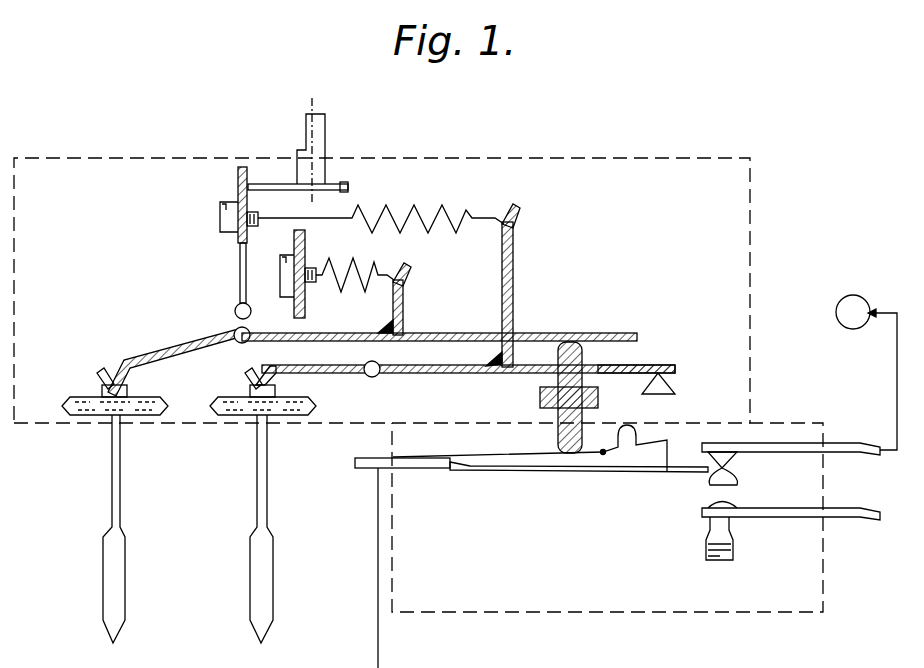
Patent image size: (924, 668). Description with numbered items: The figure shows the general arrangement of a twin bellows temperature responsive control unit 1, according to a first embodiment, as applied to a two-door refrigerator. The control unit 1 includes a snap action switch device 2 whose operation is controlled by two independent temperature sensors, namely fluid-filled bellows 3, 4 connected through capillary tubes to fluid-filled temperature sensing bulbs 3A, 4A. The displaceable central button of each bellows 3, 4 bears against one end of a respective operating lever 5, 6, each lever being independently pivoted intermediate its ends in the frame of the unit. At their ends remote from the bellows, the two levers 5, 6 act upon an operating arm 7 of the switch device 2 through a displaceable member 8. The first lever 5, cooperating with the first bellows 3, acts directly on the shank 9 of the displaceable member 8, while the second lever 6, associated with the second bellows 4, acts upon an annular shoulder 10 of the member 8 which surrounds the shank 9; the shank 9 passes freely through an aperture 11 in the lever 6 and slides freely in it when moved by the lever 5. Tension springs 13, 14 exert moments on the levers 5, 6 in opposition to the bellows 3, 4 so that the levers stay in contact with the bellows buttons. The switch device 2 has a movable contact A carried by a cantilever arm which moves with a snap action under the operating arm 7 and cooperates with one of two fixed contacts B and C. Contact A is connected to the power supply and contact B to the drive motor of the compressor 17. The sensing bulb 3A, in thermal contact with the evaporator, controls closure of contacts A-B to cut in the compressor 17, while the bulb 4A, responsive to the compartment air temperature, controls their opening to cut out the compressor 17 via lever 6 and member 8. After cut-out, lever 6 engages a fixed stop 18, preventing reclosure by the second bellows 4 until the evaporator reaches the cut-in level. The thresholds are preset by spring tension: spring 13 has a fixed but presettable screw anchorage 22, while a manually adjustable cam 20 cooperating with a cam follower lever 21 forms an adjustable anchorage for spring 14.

The temperature responsive control unit 1 is at (758, 296).
The snap action switch device 2 is at (544, 600).
The first bellows 3 is at (142, 412).
The first temperature sensing bulb 3A is at (124, 626).
The second bellows 4 is at (290, 413).
The second temperature sensing bulb 4A is at (268, 626).
The first operating lever 5 is at (188, 350).
The second operating lever 6 is at (352, 375).
The operating arm 7 is at (532, 456).
The displaceable switch operating member 8 is at (584, 348).
The shank 9 is at (570, 342).
The annular shoulder 10 is at (612, 369).
The aperture 11 is at (553, 385).
The first tension spring 13 is at (368, 263).
The second tension spring 14 is at (416, 213).
The compressor 17 is at (852, 295).
The fixed stop 18 is at (676, 389).
The manually adjustable cam 20 is at (350, 190).
The cam follower lever 21 is at (238, 166).
The presettable screw anchorage 22 is at (280, 268).
The movable contact A is at (595, 473).
The first fixed contact B is at (855, 445).
The second fixed contact C is at (853, 520).